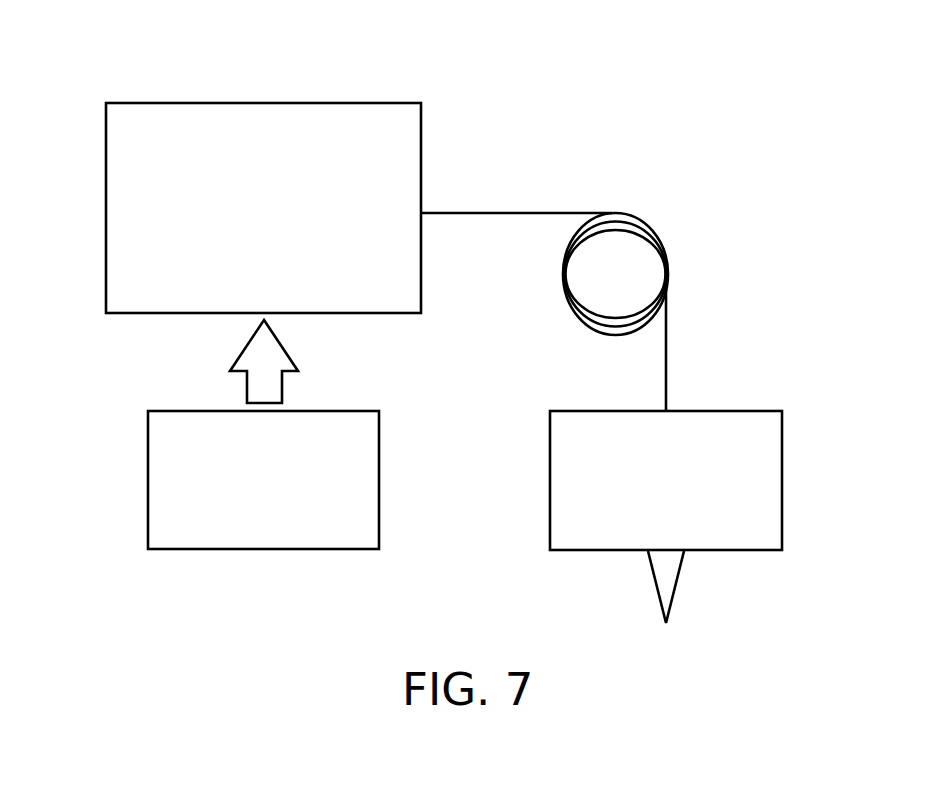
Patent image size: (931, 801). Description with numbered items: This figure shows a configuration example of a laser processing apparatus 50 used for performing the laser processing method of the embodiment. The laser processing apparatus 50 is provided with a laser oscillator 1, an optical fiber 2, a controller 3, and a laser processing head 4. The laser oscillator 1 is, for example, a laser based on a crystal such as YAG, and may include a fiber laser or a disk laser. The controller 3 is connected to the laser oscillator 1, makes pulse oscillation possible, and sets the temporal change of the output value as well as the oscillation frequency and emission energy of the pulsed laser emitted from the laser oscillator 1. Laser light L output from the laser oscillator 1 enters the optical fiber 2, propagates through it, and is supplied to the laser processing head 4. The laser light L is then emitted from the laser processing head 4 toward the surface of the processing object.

The laser processing apparatus 50 is at (642, 73).
The laser oscillator 1 is at (328, 103).
The optical fiber 2 is at (637, 213).
The controller 3 is at (328, 411).
The laser processing head 4 is at (730, 411).
The laser light L is at (680, 580).